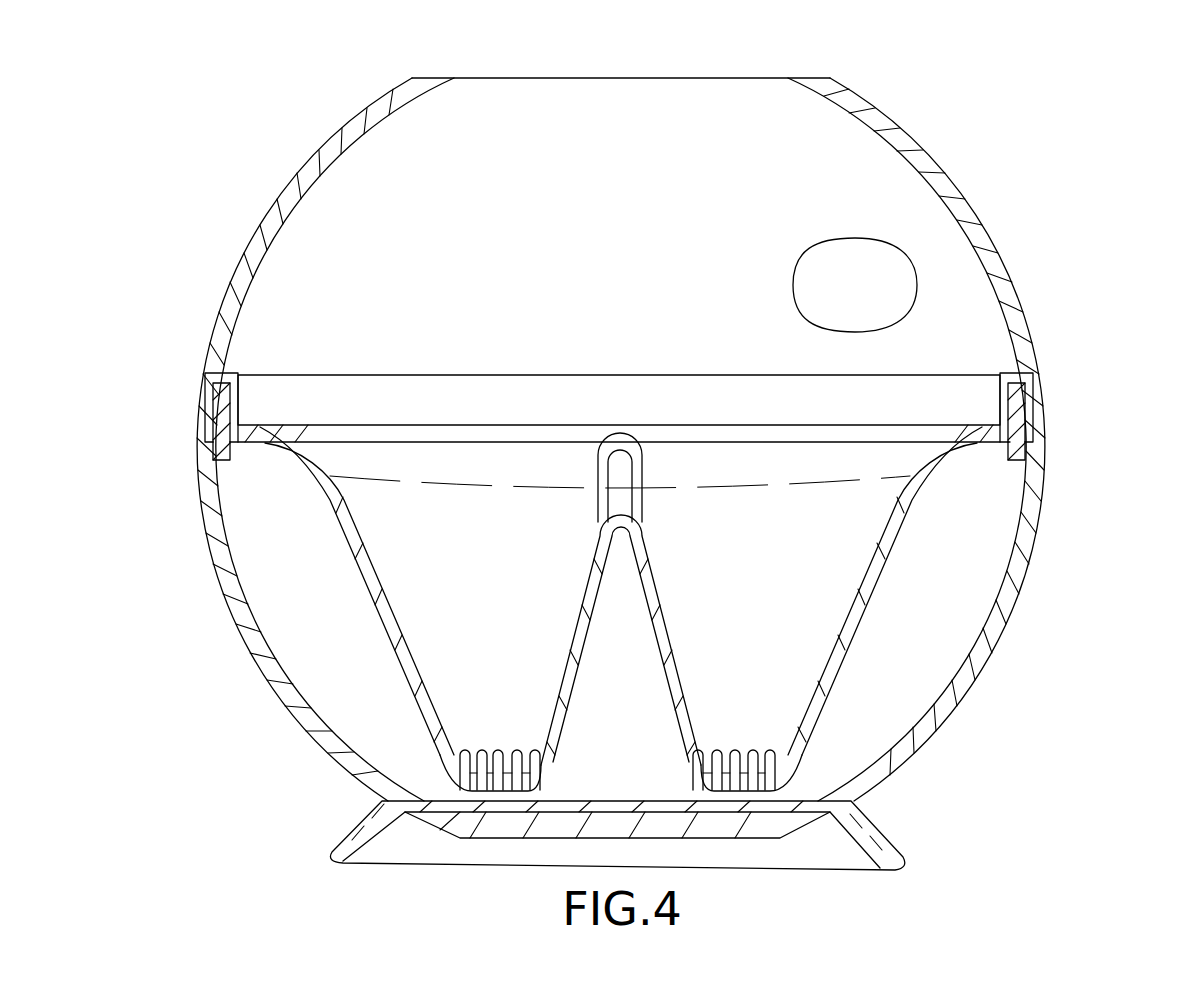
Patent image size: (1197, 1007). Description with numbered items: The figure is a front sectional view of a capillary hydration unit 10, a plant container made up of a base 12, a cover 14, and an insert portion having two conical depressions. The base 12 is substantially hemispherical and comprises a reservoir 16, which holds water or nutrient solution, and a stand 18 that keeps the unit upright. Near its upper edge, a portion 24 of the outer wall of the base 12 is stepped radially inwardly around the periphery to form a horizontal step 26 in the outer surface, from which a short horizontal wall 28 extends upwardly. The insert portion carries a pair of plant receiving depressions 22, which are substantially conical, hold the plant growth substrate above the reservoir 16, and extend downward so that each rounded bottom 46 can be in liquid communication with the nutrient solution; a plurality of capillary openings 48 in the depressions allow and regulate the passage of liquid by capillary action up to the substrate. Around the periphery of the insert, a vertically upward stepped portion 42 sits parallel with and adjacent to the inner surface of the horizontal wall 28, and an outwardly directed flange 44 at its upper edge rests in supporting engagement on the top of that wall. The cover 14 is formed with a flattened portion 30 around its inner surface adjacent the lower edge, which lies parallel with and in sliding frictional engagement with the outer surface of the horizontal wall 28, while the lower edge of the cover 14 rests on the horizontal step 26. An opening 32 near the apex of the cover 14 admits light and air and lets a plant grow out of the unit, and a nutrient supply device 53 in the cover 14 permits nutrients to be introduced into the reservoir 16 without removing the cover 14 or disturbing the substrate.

The capillary hydration unit 10 is at (1092, 338).
The base 12 is at (1015, 595).
The cover 14 is at (1010, 305).
The reservoir 16 is at (912, 705).
The stand 18 is at (887, 830).
The plant receiving depressions 22 is at (465, 590).
The portion of the outer wall 24 is at (226, 460).
The horizontal step 26 is at (198, 444).
The horizontal wall 28 is at (218, 392).
The flattened portion 30 is at (198, 425).
The opening 32 is at (715, 80).
The stepped portion 42 is at (242, 398).
The flange 44 is at (228, 376).
The rounded bottom 46 is at (545, 772).
The capillary openings 48 is at (480, 748).
The nutrient supply device 53 is at (917, 268).